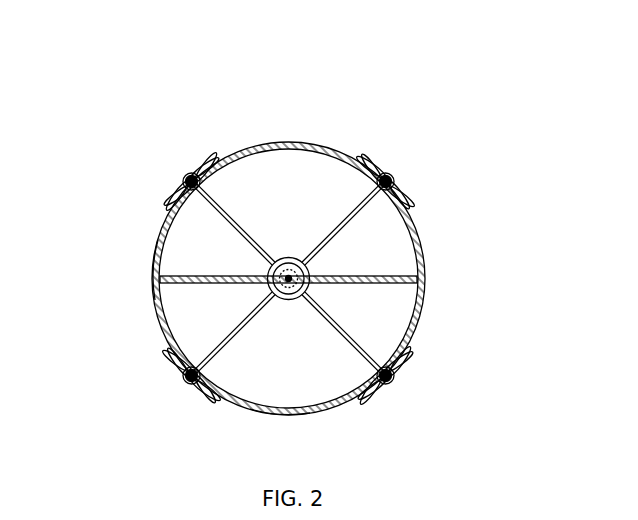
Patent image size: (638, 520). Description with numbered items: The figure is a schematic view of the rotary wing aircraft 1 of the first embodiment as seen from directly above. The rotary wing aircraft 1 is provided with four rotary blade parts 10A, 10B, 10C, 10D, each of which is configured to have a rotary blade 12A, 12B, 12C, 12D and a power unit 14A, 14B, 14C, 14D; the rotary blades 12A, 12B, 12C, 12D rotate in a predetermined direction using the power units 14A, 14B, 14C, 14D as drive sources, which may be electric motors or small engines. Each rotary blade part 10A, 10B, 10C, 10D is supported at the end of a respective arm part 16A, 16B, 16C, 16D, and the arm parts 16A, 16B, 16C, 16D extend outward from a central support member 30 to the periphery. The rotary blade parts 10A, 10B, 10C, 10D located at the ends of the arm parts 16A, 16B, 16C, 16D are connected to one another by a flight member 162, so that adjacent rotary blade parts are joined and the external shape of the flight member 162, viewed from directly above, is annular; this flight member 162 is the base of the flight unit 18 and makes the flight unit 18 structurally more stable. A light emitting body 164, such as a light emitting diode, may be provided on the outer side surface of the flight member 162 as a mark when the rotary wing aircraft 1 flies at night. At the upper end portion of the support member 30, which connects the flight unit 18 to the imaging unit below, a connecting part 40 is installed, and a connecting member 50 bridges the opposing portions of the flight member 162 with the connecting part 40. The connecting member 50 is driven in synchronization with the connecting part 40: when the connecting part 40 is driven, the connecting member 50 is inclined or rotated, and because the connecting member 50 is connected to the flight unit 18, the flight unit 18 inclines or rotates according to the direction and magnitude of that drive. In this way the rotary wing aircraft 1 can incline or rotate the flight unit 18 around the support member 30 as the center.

The rotary wing aircraft 1 is at (400, 74).
The rotary blade part 10A is at (132, 381).
The rotary blade part 10B is at (442, 383).
The rotary blade part 10C is at (442, 173).
The rotary blade part 10D is at (129, 175).
The rotary blade 12A is at (170, 364).
The rotary blade 12B is at (406, 362).
The rotary blade 12C is at (410, 189).
The rotary blade 12D is at (167, 193).
The power unit 14A is at (183, 382).
The power unit 14B is at (394, 382).
The power unit 14C is at (394, 176).
The power unit 14D is at (183, 176).
The arm part 16A is at (236, 326).
The arm part 16B is at (346, 340).
The arm part 16C is at (340, 229).
The arm part 16D is at (231, 219).
The flight unit 18 is at (441, 246).
The support member 30 is at (286, 300).
The connecting part 40 is at (292, 258).
The connecting member 50 is at (404, 284).
The flight member 162 is at (156, 262).
The light emitting body 164 is at (278, 414).